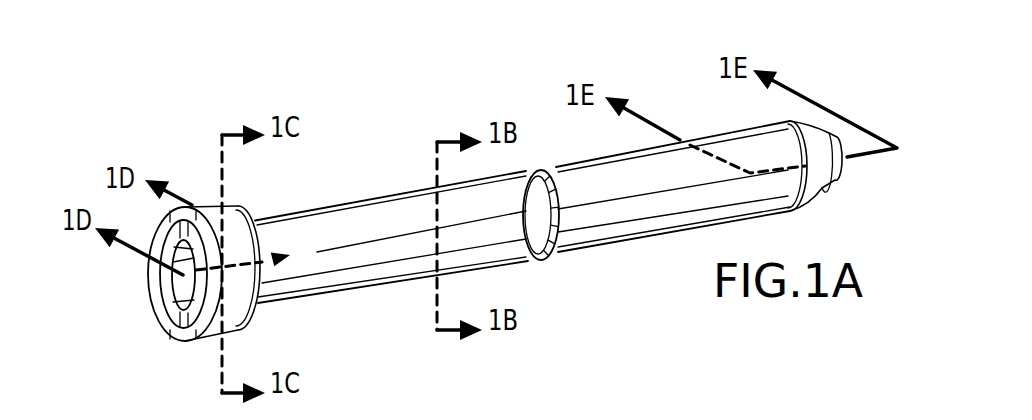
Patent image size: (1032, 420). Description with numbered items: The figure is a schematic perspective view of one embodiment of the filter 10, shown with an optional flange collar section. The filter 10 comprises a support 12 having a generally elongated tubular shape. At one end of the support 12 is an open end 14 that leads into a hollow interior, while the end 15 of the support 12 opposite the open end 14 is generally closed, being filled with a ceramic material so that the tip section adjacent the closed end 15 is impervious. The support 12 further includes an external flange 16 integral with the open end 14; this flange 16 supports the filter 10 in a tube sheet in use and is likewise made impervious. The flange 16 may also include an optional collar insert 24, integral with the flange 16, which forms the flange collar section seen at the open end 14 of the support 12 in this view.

The filter 10 is at (365, 101).
The support 12 is at (158, 322).
The open end 14 is at (178, 283).
The end 15 is at (833, 185).
The external flange 16 is at (207, 338).
The collar insert 24 is at (168, 301).